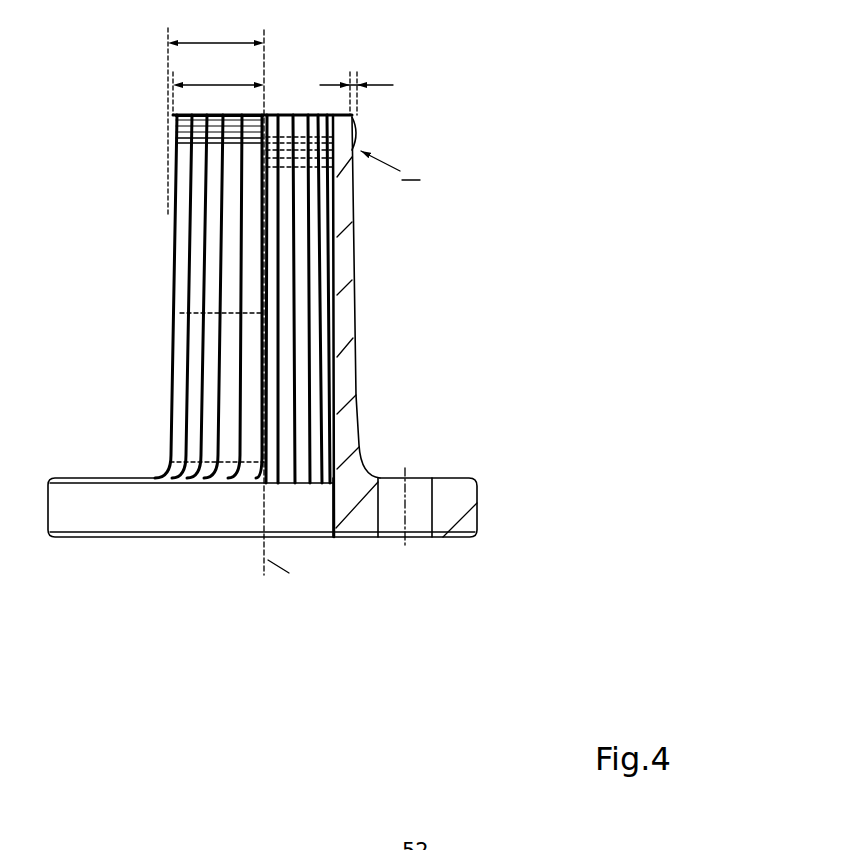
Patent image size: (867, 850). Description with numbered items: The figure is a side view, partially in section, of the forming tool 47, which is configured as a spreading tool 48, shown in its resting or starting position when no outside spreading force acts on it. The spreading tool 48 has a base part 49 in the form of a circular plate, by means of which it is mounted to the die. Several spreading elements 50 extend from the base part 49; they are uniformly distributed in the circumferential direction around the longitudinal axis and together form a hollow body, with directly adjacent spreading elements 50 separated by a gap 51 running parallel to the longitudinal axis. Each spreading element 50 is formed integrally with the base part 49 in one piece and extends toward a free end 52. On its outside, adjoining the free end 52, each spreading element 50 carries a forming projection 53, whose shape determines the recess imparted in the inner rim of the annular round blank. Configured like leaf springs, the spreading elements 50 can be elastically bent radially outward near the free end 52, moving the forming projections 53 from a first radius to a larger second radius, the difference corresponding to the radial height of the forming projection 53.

The forming tool 47 is at (352, 304).
The spreading tool 48 is at (445, 72).
The base part 49 is at (147, 513).
The spreading elements 50 is at (348, 263).
The gap 51 is at (241, 336).
The free end 52 is at (308, 113).
The forming projection 53 is at (357, 125).